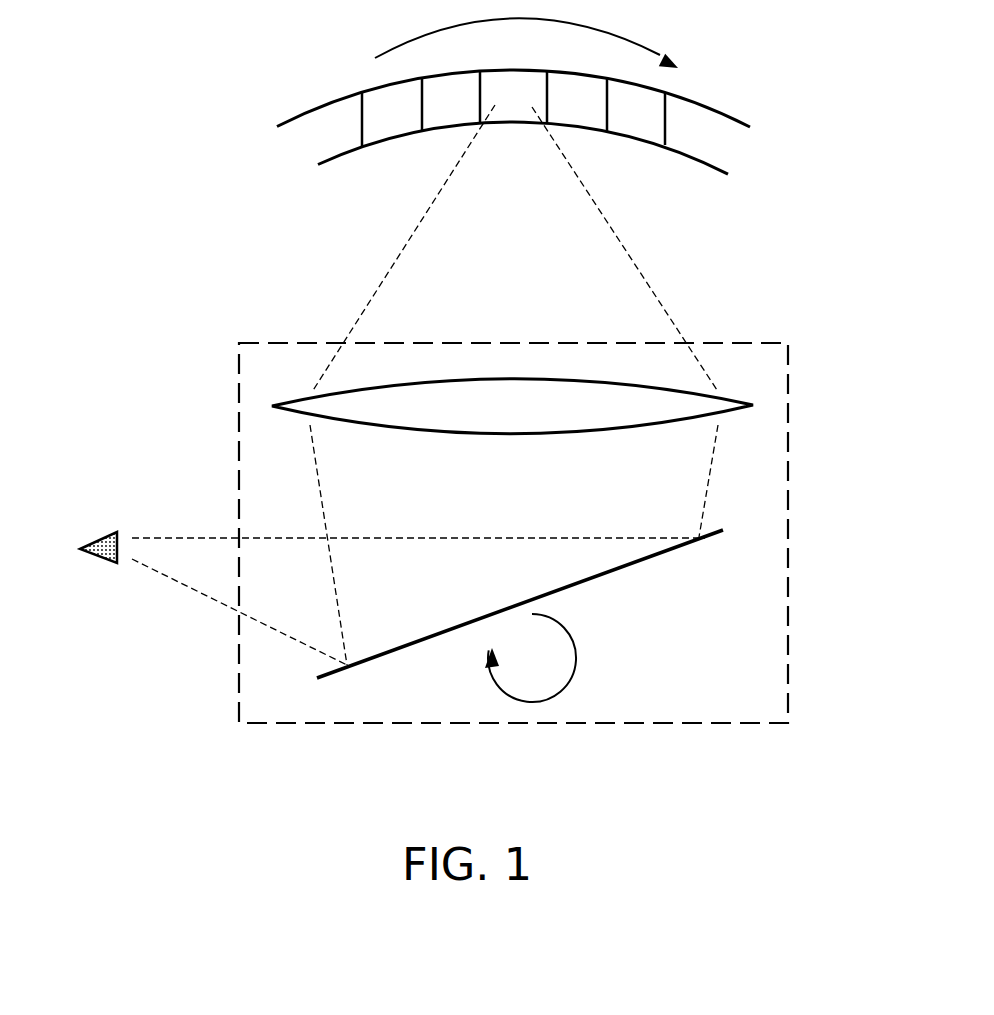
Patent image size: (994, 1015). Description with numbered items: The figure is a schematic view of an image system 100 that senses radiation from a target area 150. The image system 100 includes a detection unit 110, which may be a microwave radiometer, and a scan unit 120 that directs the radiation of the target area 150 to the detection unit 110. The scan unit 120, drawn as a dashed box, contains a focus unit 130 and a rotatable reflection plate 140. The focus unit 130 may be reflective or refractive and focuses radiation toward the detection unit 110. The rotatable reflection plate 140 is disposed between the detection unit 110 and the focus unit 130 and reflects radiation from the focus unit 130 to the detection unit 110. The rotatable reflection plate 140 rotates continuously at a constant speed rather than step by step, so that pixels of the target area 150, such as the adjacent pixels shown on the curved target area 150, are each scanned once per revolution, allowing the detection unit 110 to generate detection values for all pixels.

The image system 100 is at (797, 233).
The detection unit 110 is at (100, 560).
The scan unit 120 is at (788, 530).
The focus unit 130 is at (753, 405).
The rotatable reflection plate 140 is at (625, 568).
The target area 150 is at (316, 109).